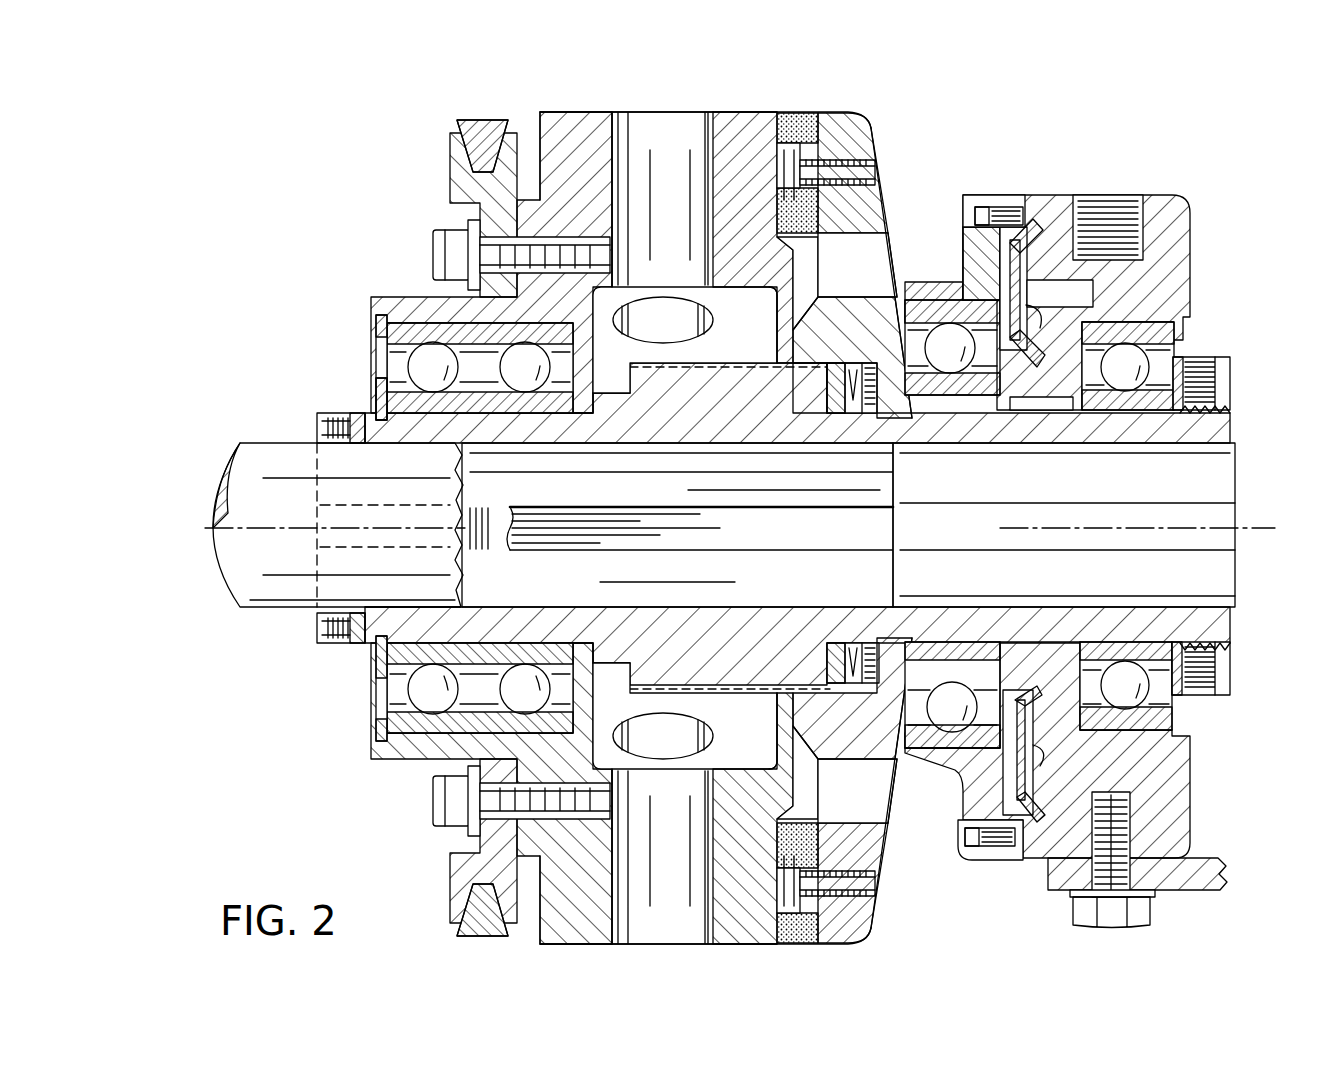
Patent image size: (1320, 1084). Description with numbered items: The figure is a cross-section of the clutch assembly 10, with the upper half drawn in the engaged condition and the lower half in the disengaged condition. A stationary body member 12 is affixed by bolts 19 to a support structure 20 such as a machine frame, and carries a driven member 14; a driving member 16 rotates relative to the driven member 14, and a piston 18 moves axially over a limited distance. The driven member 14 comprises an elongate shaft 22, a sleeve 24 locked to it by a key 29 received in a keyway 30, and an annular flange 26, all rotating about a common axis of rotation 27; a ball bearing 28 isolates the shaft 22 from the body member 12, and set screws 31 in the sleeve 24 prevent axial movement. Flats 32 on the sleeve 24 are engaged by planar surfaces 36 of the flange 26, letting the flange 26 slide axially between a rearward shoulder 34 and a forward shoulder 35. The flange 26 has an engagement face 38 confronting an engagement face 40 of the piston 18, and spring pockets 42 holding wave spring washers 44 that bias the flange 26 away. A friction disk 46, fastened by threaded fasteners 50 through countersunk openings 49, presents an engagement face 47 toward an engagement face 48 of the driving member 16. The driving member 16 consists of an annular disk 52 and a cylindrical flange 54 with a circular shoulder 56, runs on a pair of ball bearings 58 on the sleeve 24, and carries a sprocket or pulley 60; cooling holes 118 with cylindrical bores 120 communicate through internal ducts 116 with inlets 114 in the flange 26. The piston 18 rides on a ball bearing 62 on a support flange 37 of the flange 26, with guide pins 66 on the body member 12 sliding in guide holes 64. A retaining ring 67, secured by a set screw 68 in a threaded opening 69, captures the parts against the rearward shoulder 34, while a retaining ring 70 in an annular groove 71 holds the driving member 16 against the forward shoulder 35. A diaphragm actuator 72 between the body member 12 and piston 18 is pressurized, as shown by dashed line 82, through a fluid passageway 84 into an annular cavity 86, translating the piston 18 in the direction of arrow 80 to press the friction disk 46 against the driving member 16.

The clutch assembly 10 is at (227, 747).
The body member 12 is at (1194, 212).
The driven member 14 is at (866, 112).
The driving member 16 is at (742, 104).
The piston 18 is at (945, 276).
The bolts 19 is at (1115, 928).
The support structure 20 is at (1230, 877).
The shaft 22 is at (252, 615).
The sleeve 24 is at (532, 634).
The annular flange 26 is at (888, 220).
The axis of rotation 27 is at (207, 528).
The ball bearing 28 is at (1132, 692).
The key 29 is at (470, 507).
The keyway 30 is at (700, 505).
The set screws 31 is at (340, 413).
The flats 32 is at (781, 348).
The rearward shoulder 34 is at (850, 368).
The forward shoulder 35 is at (573, 413).
The planar surfaces 36 is at (752, 372).
The support flange 37 is at (918, 418).
The engagement face 38 is at (905, 336).
The engagement face 40 is at (893, 297).
The spring pockets 42 is at (848, 410).
The wave spring washers 44 is at (827, 390).
The friction disk 46 is at (798, 290).
The engagement face 47 is at (713, 233).
The engagement face 48 is at (773, 152).
The countersunk openings 49 is at (800, 172).
The threaded fasteners 50 is at (862, 181).
The annular disk 52 is at (614, 133).
The cylindrical flange 54 is at (402, 296).
The circular shoulder 56 is at (617, 322).
The ball bearings 58 is at (505, 352).
The sprocket or pulley 60 is at (450, 160).
The ball bearing 62 is at (950, 340).
The guide holes 64 is at (963, 222).
The guide pins 66 is at (985, 208).
The retaining ring 67 is at (1225, 373).
The set screw 68 is at (1225, 399).
The threaded opening 69 is at (1190, 358).
The retaining ring 70 is at (377, 380).
The annular groove 71 is at (377, 400).
The diaphragm actuator 72 is at (1030, 296).
The arrow 80 is at (842, 96).
The dashed line 82 is at (1112, 130).
The fluid passageway 84 is at (1130, 271).
The annular cavity 86 is at (1034, 318).
The inlets 114 is at (862, 528).
The internal ducts 116 is at (775, 305).
The cooling holes 118 is at (682, 140).
The cylindrical bore 120 is at (695, 200).